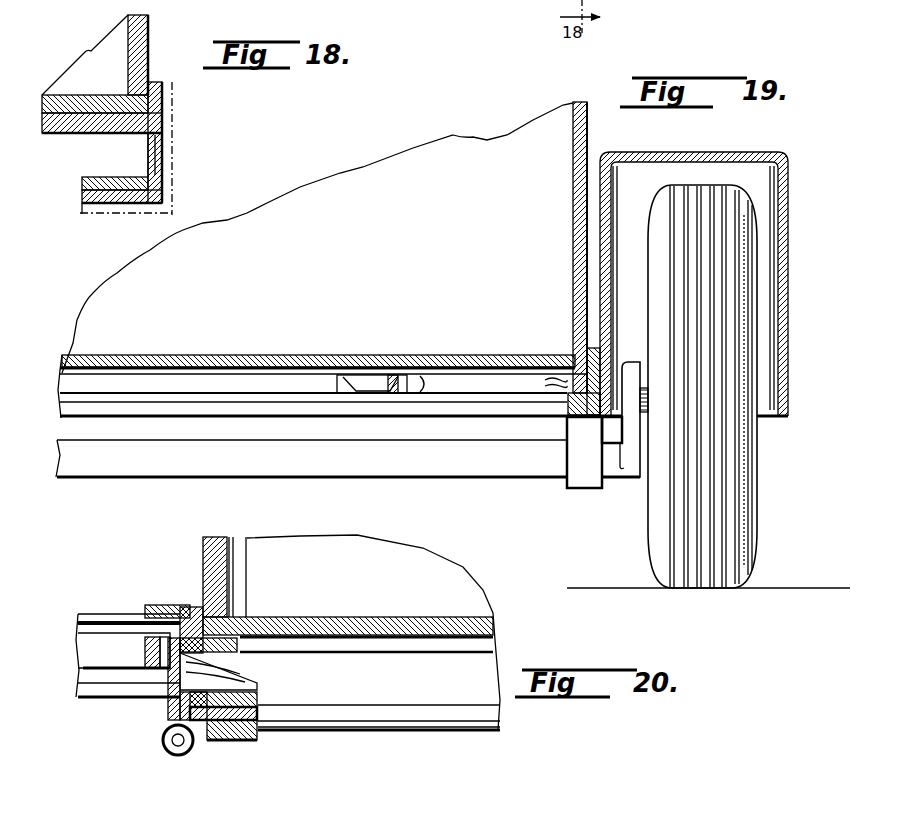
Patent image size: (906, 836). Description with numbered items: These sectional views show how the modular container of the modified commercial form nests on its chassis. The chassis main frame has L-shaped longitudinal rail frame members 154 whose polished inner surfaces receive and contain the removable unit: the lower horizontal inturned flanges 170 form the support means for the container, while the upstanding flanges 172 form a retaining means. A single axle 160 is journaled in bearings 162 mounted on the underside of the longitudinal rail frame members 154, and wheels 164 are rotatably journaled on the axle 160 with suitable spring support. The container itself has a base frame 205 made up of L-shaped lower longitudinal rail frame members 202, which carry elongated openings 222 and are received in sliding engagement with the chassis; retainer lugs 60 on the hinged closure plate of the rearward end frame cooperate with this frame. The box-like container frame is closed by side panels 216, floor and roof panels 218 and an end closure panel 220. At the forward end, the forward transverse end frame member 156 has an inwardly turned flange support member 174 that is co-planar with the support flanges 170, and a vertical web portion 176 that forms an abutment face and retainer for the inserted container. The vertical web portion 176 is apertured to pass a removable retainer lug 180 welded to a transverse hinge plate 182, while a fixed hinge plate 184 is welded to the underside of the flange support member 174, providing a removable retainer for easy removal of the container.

In FIG. 19, the retainer lug 60 is at (373, 385).
In FIG. 19, the longitudinal rail frame member 154 is at (566, 418).
In FIG. 20, the forward transverse end frame member 156 is at (165, 605).
In FIG. 19, the axle 160 is at (395, 462).
In FIG. 19, the bearing 162 is at (580, 478).
In FIG. 19, the wheel 164 is at (747, 523).
In FIG. 19, the lower horizontal inturned flange 170 is at (567, 440).
In FIG. 20, the lower horizontal inturned flange 170 is at (379, 749).
In FIG. 19, the upstanding flange 172 is at (606, 356).
In FIG. 20, the inwardly turned flange support member 174 is at (265, 735).
In FIG. 20, the vertical web portion 176 is at (168, 718).
In FIG. 20, the removable retainer lug 180 is at (243, 680).
In FIG. 20, the transverse hinge plate 182 is at (170, 680).
In FIG. 20, the fixed hinge plate 184 is at (204, 746).
In FIG. 18, the lower longitudinal rail frame member 202 is at (165, 126).
In FIG. 19, the lower longitudinal rail frame member 202 is at (587, 381).
In FIG. 20, the lower longitudinal rail frame member 202 is at (257, 708).
In FIG. 18, the base frame 205 is at (224, 166).
In FIG. 20, the base frame 205 is at (490, 670).
In FIG. 18, the side panel 216 is at (148, 48).
In FIG. 19, the side panel 216 is at (588, 140).
In FIG. 18, the floor and roof panel 218 is at (68, 98).
In FIG. 19, the floor and roof panel 218 is at (296, 356).
In FIG. 20, the floor and roof panel 218 is at (387, 617).
In FIG. 20, the end closure panel 220 is at (205, 546).
In FIG. 18, the elongated opening 222 is at (165, 162).
In FIG. 19, the elongated opening 222 is at (424, 384).